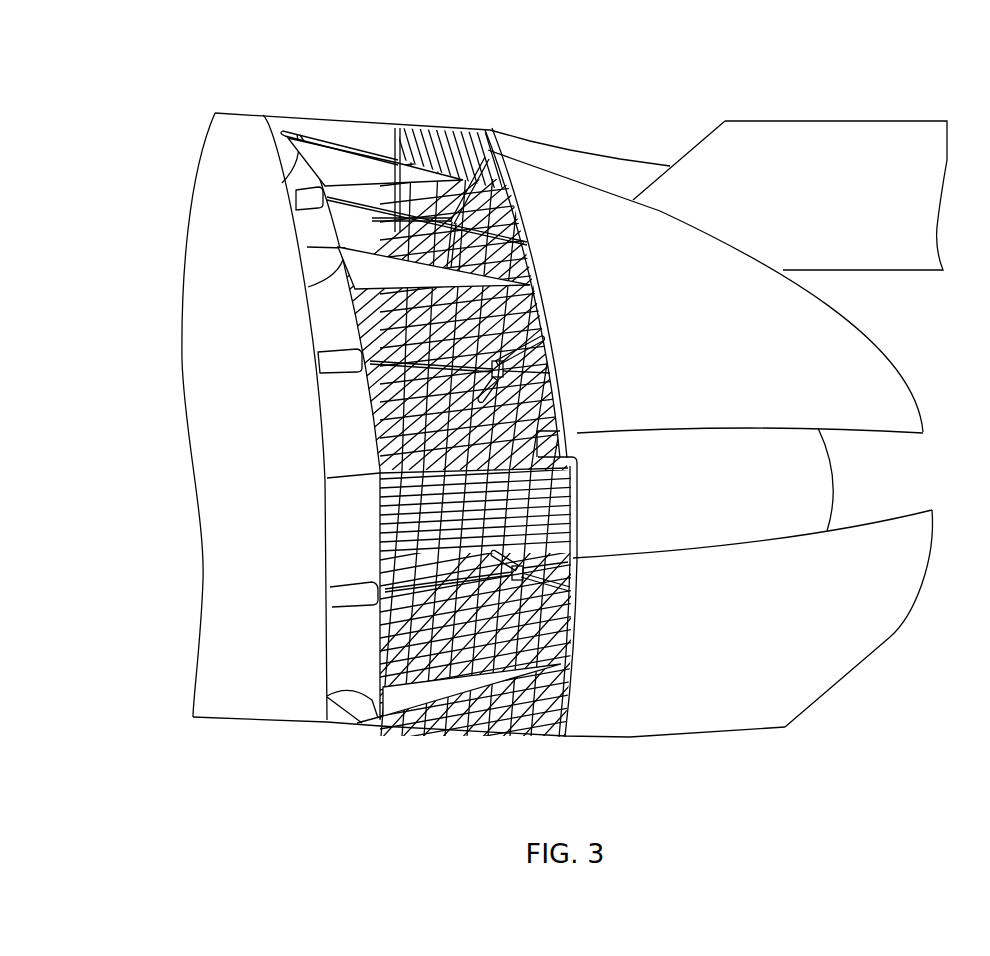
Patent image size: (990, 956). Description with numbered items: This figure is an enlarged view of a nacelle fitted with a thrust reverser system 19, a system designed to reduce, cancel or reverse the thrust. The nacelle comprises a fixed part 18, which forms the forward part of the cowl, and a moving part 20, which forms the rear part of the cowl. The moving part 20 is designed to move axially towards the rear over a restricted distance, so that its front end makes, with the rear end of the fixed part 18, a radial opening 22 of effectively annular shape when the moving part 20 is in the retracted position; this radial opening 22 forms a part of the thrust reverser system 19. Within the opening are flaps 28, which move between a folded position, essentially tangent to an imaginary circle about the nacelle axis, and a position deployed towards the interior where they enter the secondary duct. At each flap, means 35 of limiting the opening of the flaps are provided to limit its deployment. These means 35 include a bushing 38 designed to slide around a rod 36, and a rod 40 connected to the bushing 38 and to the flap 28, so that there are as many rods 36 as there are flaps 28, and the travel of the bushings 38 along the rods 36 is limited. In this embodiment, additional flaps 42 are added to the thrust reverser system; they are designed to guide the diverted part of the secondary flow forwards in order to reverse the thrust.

The fixed part 18 is at (245, 153).
The thrust reverser system 19 is at (529, 110).
The moving part 20 is at (893, 373).
The radial opening 22 is at (355, 137).
The flap 28 is at (447, 540).
The means of limiting the opening of the flaps 35 is at (370, 182).
The rod 36 is at (487, 383).
The bushing 38 is at (495, 363).
The rod 40 is at (493, 393).
The flap 42 is at (500, 202).